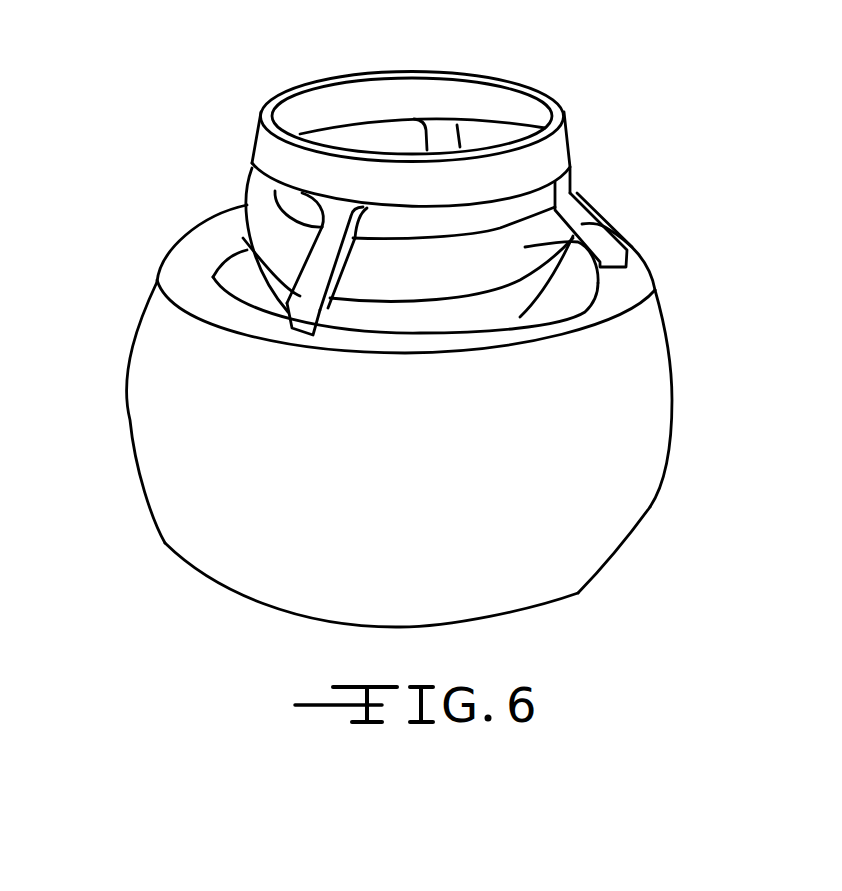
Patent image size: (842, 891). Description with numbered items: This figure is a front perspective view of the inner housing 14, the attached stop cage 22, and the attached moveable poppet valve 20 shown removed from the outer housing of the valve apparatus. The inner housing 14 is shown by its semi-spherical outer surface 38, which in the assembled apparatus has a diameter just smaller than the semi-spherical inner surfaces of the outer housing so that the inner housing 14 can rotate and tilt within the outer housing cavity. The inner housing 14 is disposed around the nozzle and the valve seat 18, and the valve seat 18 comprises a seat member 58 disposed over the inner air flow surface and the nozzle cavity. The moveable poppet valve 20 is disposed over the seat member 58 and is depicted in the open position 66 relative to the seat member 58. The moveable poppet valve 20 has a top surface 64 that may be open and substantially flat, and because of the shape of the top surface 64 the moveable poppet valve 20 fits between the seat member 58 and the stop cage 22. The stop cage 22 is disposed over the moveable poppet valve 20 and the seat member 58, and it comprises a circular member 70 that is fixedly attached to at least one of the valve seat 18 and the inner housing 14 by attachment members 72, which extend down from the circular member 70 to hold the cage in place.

The inner housing 14 is at (638, 392).
The valve seat 18 is at (272, 330).
The moveable poppet valve 20 is at (597, 237).
The stop cage 22 is at (557, 148).
The semi-spherical outer surface 38 is at (644, 500).
The seat member 58 is at (213, 276).
The top surface 64 is at (434, 227).
The open position 66 is at (267, 213).
The circular member 70 is at (275, 100).
The attachment members 72 is at (446, 137).